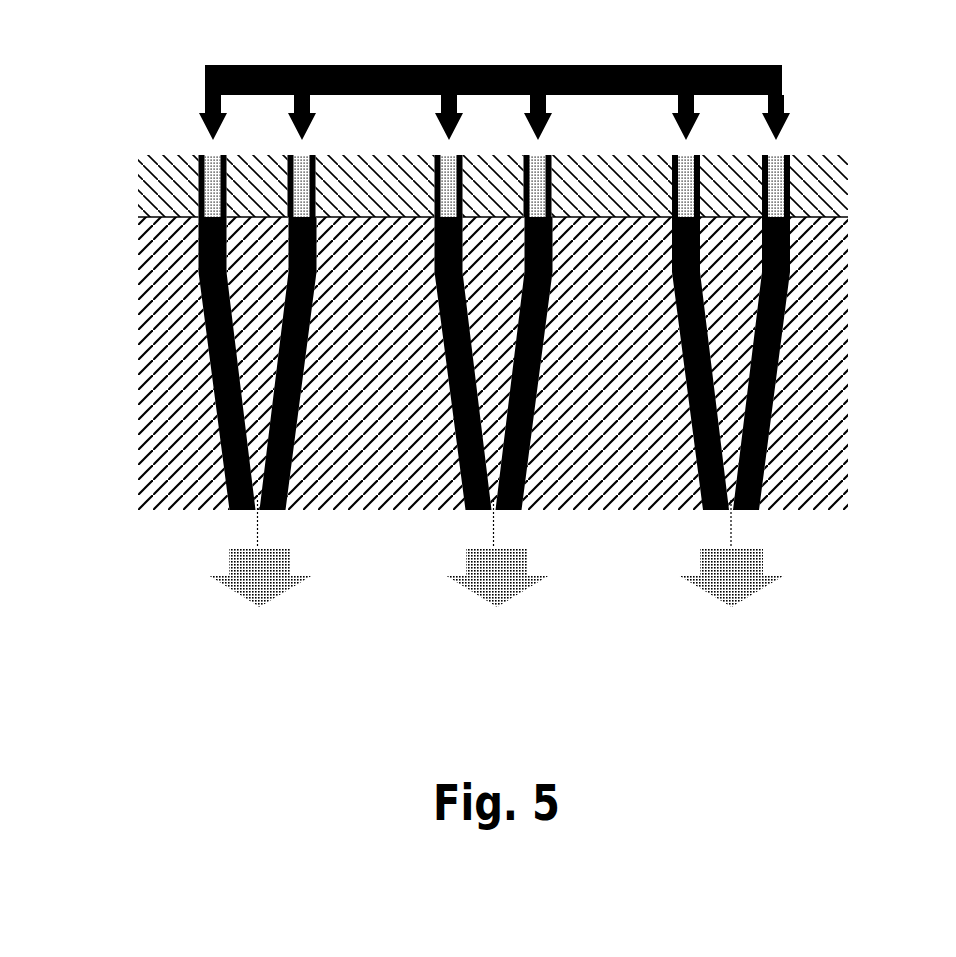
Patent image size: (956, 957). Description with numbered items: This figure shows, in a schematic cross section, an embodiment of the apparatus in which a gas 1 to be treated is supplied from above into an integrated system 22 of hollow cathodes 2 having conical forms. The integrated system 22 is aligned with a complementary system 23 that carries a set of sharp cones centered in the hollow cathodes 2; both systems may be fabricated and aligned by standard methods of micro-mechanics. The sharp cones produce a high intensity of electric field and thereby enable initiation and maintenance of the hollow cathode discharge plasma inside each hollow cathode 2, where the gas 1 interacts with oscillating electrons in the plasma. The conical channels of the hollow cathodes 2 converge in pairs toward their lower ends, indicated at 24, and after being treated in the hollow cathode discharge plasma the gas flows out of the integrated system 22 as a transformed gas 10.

The gas 1 is at (290, 65).
The complementary system 23 is at (168, 186).
The integrated system 22 is at (155, 418).
The hollow cathode 2 is at (200, 300).
The channel outlet 24 is at (258, 497).
The transformed gas 10 is at (510, 565).